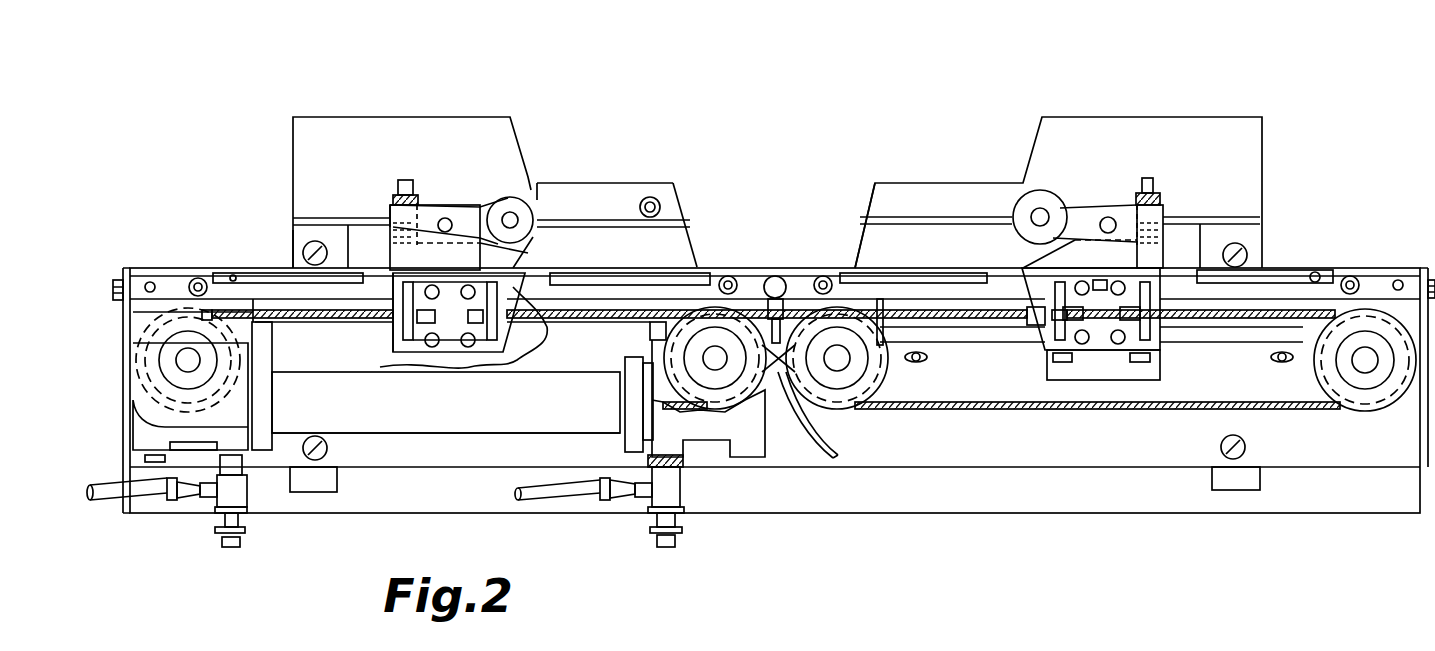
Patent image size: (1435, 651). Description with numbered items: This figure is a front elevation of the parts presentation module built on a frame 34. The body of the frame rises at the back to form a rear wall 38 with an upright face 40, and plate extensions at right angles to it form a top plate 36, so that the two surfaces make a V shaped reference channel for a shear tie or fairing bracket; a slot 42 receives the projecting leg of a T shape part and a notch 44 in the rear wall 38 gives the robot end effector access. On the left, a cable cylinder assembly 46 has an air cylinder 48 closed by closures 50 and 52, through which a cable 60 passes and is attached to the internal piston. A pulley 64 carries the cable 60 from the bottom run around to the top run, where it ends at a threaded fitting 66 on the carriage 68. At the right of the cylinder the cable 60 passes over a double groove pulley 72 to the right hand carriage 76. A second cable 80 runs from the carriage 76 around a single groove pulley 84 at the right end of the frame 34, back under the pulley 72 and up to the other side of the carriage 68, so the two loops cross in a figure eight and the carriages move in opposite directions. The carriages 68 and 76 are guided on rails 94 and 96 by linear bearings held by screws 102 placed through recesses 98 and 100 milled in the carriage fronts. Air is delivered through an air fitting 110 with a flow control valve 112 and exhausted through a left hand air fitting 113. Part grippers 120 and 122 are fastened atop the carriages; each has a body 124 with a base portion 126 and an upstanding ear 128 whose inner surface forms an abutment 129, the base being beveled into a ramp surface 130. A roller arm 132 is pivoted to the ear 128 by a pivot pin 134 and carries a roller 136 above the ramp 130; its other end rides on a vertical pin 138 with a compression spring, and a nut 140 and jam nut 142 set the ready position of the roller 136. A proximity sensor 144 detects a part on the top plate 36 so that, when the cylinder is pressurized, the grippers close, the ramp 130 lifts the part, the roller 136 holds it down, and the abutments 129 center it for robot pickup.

The frame 34 is at (1394, 269).
The top plate 36 is at (802, 268).
The rear wall 38 is at (1068, 117).
The upright face 40 is at (1125, 152).
The slot 42 is at (683, 250).
The notch 44 is at (740, 267).
The cable cylinder assembly 46 is at (410, 440).
The air cylinder 48 is at (520, 418).
The closure 50 is at (264, 358).
The closure 52 is at (634, 370).
The cable 60 is at (945, 312).
The pulley 64 is at (173, 327).
The threaded fitting 66 is at (386, 350).
The carriage 68 is at (518, 289).
The double groove pulley 72 is at (862, 385).
The right hand carriage 76 is at (1148, 347).
The second cable 80 is at (1088, 412).
The single groove pulley 84 is at (1370, 393).
The rail 94 is at (280, 310).
The rail 96 is at (945, 320).
The recess 98 is at (448, 342).
The recess 100 is at (1075, 377).
The screws 102 is at (476, 348).
The air fitting 110 is at (612, 500).
The flow control valve 112 is at (231, 547).
The left hand air fitting 113 is at (150, 500).
The part gripper 120 is at (592, 228).
The part gripper 122 is at (1033, 249).
The body 124 is at (418, 266).
The base portion 126 is at (297, 240).
The upstanding ear 128 is at (458, 205).
The upstanding abutment 129 is at (516, 197).
The ramp surface 130 is at (509, 255).
The roller arm 132 is at (455, 206).
The pivot pin 134 is at (447, 218).
The roller 136 is at (535, 200).
The vertical pin 138 is at (407, 180).
The nut 140 is at (390, 230).
The jam nut 142 is at (1160, 198).
The proximity sensor 144 is at (846, 268).